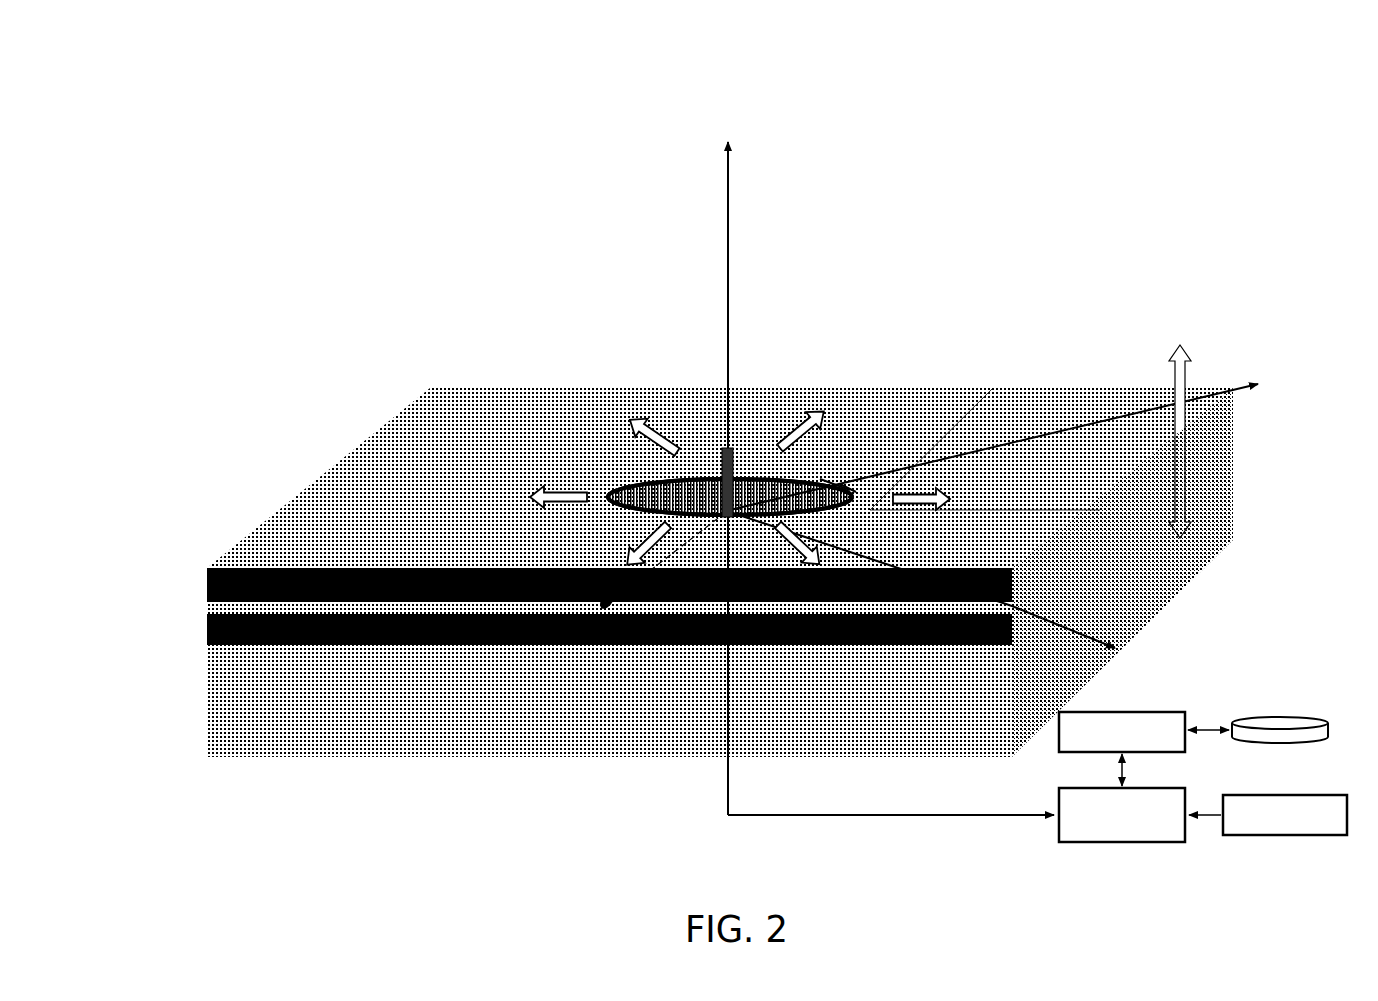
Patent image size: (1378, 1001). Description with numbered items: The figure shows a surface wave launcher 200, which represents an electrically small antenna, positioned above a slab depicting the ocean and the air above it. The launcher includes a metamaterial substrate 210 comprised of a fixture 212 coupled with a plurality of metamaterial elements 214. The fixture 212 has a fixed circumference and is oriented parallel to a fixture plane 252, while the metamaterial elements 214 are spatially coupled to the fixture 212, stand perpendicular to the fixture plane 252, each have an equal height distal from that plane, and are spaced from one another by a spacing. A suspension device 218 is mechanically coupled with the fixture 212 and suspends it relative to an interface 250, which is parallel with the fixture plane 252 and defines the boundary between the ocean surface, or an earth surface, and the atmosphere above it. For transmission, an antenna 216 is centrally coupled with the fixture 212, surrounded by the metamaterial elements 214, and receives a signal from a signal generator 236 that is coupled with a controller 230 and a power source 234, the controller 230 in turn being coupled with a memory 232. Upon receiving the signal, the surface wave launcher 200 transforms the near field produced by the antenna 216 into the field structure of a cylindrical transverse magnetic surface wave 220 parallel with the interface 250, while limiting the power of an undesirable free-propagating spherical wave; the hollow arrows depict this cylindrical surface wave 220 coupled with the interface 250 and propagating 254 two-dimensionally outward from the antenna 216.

The surface wave launcher 200 is at (97, 102).
The metamaterial substrate 210 is at (585, 470).
The fixture 212 is at (841, 478).
The metamaterial elements 214 is at (647, 478).
The antenna 216 is at (720, 432).
The suspension device 218 is at (856, 490).
The cylindrical transverse magnetic surface wave 220 is at (198, 612).
The controller 230 is at (1122, 712).
The memory 232 is at (1282, 715).
The power source 234 is at (1288, 835).
The signal generator 236 is at (1130, 842).
The interface 250 is at (1062, 563).
The fixture plane 252 is at (967, 410).
The propagating 254 is at (530, 497).